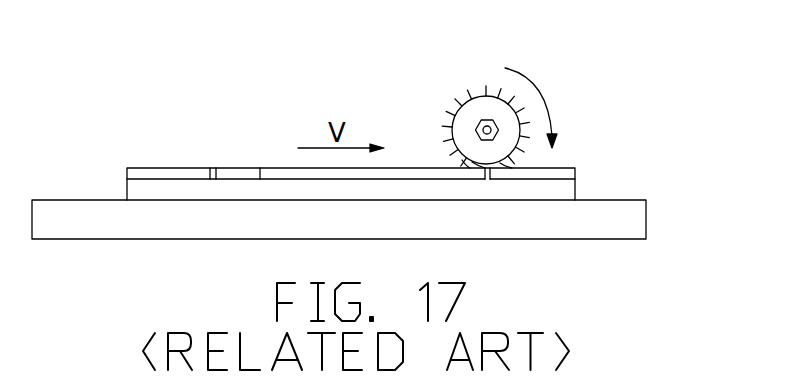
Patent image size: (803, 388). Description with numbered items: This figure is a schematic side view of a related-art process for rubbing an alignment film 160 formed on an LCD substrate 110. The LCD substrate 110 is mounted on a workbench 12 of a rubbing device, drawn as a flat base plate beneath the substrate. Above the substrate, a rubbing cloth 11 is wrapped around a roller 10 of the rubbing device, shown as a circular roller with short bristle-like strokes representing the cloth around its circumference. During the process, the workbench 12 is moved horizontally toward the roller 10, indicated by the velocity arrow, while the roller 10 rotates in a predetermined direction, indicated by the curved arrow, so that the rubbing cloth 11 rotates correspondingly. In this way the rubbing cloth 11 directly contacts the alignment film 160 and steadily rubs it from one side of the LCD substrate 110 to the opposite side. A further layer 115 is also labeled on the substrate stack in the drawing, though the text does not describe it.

The roller 10 is at (465, 125).
The rubbing cloth 11 is at (457, 99).
The workbench 12 is at (622, 218).
The LCD substrate 110 is at (557, 191).
The thin film layer 115 is at (213, 168).
The alignment film 160 is at (260, 179).